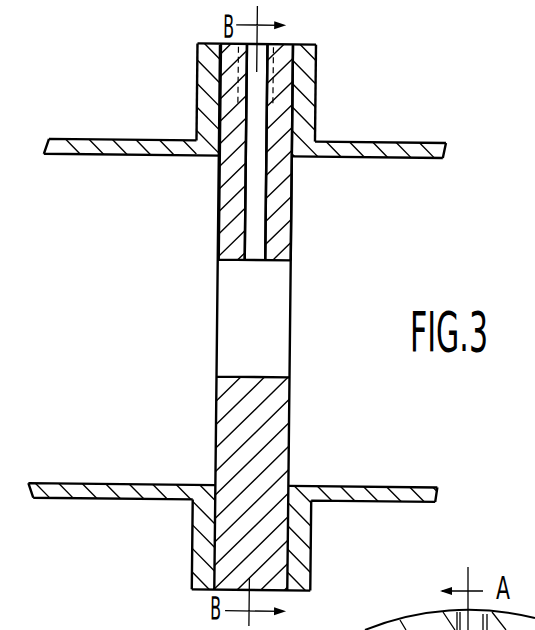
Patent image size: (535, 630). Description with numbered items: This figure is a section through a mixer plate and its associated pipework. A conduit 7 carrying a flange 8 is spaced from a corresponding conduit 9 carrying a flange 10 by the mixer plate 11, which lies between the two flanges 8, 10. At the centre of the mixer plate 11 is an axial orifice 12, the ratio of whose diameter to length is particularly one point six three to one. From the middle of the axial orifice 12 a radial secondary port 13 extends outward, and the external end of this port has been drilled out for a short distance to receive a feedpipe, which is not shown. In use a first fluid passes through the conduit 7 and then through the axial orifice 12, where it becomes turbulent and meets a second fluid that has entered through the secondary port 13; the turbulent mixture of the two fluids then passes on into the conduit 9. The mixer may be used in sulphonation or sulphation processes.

The conduit 7 is at (367, 146).
The flange 8 is at (301, 76).
The conduit 9 is at (126, 143).
The flange 10 is at (200, 68).
The mixer plate 11 is at (217, 211).
The axial orifice 12 is at (282, 261).
The radial secondary port 13 is at (257, 191).